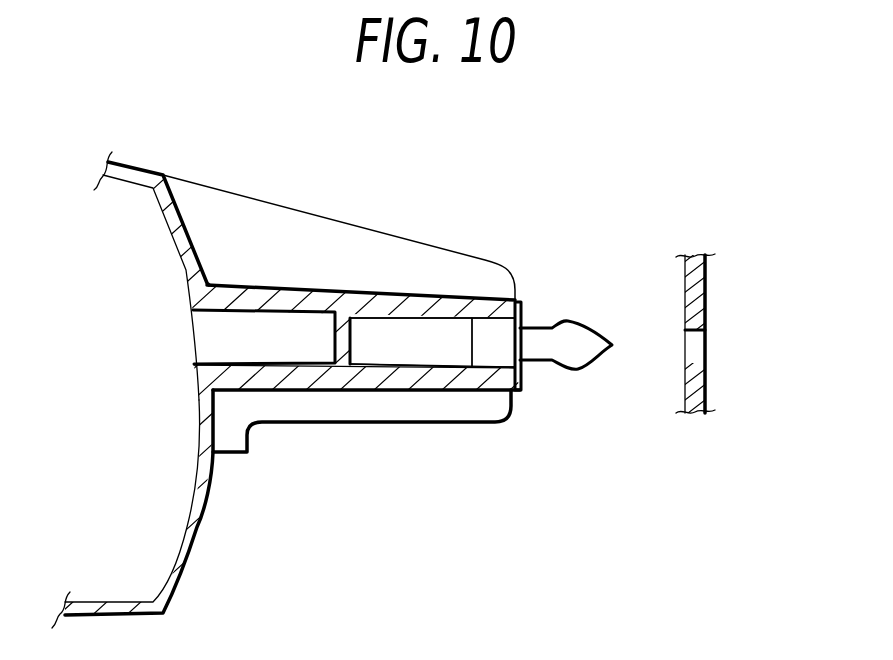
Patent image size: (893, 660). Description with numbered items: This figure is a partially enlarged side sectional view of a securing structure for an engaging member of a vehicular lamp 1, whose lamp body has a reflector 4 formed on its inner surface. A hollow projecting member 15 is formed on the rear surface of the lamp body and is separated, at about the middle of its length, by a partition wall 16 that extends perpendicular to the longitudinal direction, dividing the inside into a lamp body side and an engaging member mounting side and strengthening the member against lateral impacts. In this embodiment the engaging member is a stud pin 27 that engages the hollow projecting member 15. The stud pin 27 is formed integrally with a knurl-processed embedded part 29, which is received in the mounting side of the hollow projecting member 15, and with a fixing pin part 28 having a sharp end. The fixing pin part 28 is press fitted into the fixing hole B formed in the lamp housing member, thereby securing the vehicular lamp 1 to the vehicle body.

The vehicular lamp 1 is at (195, 240).
The reflector 4 is at (180, 528).
The hollow projecting member 15 is at (291, 287).
The partition wall 16 is at (357, 342).
The stud pin 27 is at (545, 298).
The fixing pin part 28 is at (566, 370).
The embedded part 29 is at (485, 353).
The fixing hole B is at (689, 331).